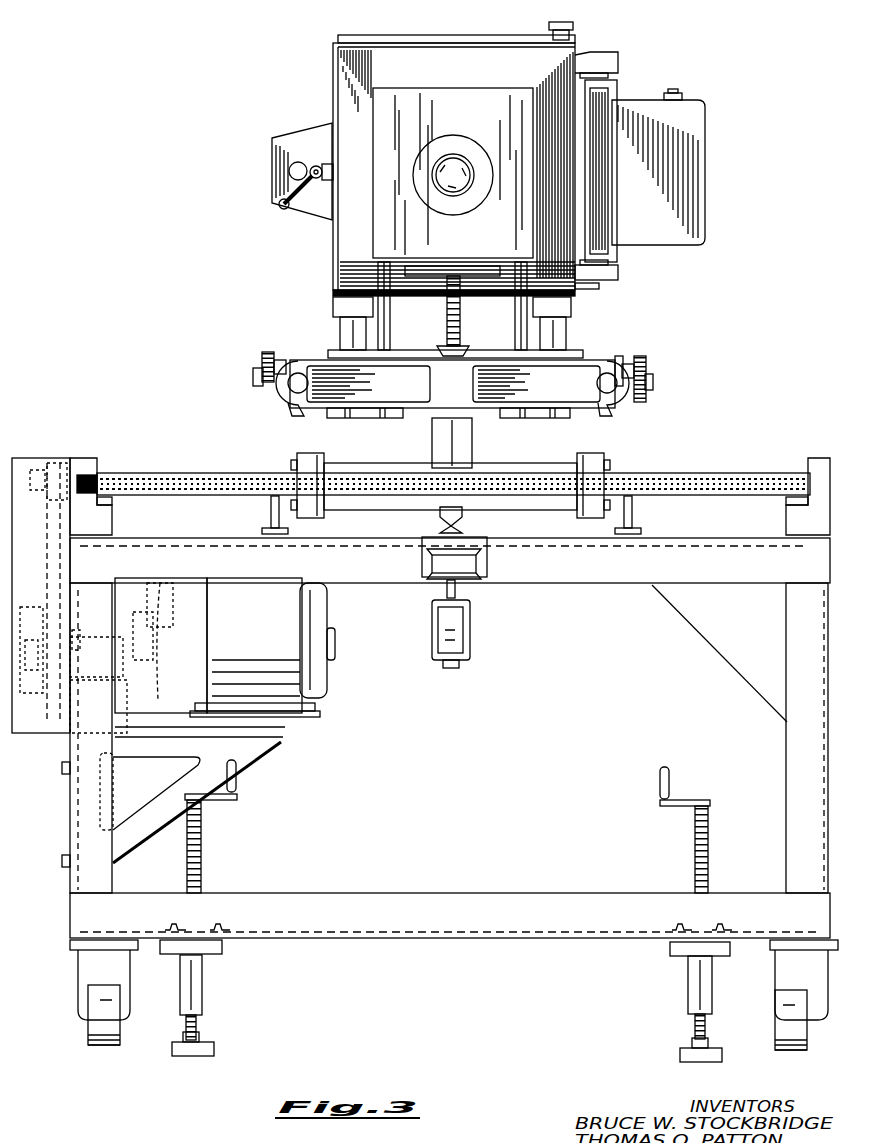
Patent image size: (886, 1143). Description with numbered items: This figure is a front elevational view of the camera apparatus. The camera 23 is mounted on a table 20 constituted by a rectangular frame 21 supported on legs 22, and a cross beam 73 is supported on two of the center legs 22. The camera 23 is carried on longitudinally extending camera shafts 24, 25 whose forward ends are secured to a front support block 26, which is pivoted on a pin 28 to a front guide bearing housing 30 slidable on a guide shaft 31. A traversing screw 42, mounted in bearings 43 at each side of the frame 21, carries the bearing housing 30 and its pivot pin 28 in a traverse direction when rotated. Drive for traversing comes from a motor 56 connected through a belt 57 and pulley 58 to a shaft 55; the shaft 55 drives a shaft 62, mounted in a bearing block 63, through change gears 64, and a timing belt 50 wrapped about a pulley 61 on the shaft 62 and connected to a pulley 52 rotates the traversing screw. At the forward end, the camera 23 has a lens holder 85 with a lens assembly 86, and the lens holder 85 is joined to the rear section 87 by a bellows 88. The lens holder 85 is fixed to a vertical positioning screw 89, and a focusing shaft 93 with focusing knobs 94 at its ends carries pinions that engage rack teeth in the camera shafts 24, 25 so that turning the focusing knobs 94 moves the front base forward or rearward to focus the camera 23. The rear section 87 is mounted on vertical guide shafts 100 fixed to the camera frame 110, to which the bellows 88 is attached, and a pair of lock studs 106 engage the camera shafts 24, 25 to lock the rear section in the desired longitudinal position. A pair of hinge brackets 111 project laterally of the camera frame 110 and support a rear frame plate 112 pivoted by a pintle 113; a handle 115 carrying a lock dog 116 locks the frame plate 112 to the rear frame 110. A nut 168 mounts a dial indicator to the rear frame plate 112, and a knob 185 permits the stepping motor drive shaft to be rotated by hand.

The table 20 is at (645, 594).
The rectangular frame 21 is at (450, 560).
The legs 22 is at (66, 898).
The camera 23 is at (308, 90).
The camera shaft 24 is at (298, 393).
The camera shaft 25 is at (607, 395).
The front support block 26 is at (536, 384).
The pin 28 is at (456, 360).
The front guide bearing housing 30 is at (322, 458).
The guide shaft 31 is at (625, 470).
The traversing screw 42 is at (512, 482).
The bearings 43 is at (97, 462).
The timing belt 50 is at (50, 546).
The pulley 52 is at (52, 466).
The shaft 55 is at (148, 620).
The motor 56 is at (271, 645).
The belt 57 is at (166, 622).
The pulley 58 is at (156, 605).
The pulley 61 is at (78, 630).
The shaft 62 is at (92, 682).
The bearing block 63 is at (88, 640).
The change gears 64 is at (34, 592).
The cross beam 73 is at (300, 716).
The lens holder 85 is at (454, 159).
The lens assembly 86 is at (475, 182).
The rear section 87 is at (437, 37).
The bellows 88 is at (453, 160).
The vertical positioning screw 89 is at (469, 316).
The focusing shaft 93 is at (627, 356).
The focusing knobs 94 is at (262, 357).
The vertical guide shafts 100 is at (340, 332).
The lock studs 106 is at (258, 376).
The camera frame 110 is at (590, 287).
The hinge brackets 111 is at (622, 65).
The rear frame plate 112 is at (595, 235).
The pintle 113 is at (605, 200).
The handle 115 is at (284, 212).
The lock dog 116 is at (326, 172).
The nut 168 is at (303, 163).
The knob 185 is at (683, 96).